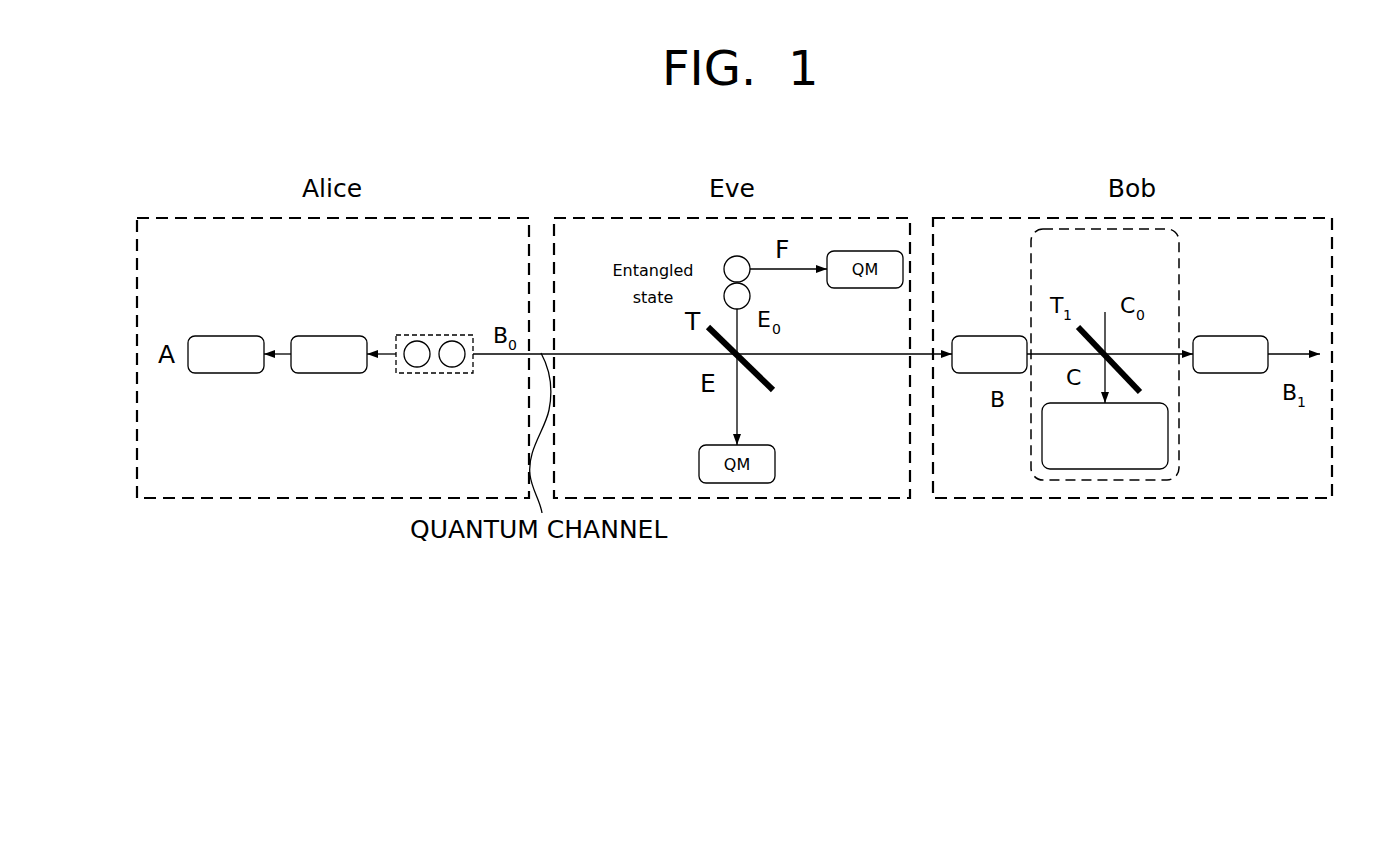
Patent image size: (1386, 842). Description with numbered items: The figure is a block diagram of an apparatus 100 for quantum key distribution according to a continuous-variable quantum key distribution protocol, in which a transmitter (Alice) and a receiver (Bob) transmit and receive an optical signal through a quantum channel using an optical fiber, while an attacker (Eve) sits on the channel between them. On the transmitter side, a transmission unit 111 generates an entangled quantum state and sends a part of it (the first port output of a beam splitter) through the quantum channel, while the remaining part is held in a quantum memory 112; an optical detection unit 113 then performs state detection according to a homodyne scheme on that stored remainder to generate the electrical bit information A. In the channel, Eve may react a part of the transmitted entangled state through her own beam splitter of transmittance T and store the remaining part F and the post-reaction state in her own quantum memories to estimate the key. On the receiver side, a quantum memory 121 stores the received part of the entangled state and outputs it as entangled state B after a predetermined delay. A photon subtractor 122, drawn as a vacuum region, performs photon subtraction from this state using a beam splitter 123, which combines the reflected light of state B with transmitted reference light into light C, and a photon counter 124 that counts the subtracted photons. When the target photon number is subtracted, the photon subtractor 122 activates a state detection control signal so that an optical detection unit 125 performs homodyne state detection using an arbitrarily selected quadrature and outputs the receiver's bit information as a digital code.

The apparatus for quantum key distribution 100 is at (188, 169).
The transmission unit 111 is at (434, 373).
The quantum memory 112 is at (329, 373).
The optical detection unit 113 is at (227, 373).
The quantum memory 121 is at (990, 336).
The photon subtractor 122 is at (1179, 268).
The beam splitter 123 is at (1142, 390).
The photon counter 124 is at (1168, 437).
The optical detection unit 125 is at (1232, 336).